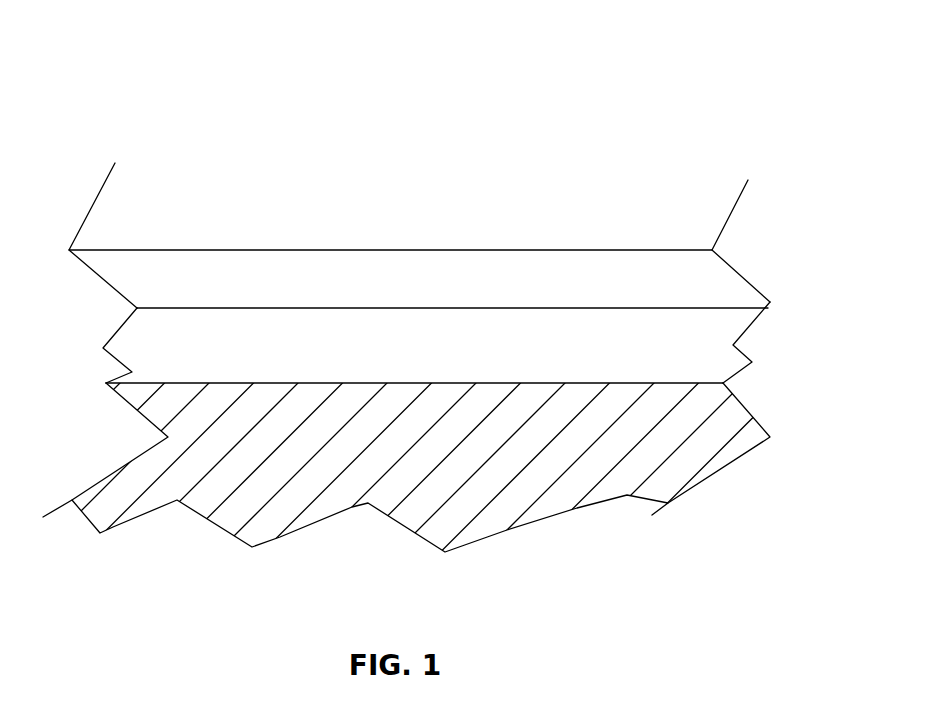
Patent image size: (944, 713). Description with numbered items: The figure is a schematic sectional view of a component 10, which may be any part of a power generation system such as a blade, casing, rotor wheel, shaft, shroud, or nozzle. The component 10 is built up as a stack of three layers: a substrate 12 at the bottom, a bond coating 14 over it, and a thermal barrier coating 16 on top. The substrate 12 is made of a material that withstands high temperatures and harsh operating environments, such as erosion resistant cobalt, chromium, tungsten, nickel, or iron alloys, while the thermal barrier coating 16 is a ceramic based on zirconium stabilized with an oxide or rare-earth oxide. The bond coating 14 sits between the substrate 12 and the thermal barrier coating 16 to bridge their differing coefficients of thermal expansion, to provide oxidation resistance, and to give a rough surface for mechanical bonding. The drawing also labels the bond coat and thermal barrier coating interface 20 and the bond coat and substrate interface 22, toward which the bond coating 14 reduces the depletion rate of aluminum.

The component 10 is at (423, 300).
The substrate 12 is at (387, 452).
The bond coating 14 is at (392, 356).
The thermal barrier coating (TBC) 16 is at (391, 292).
The bond coat and thermal barrier coating interface 20 is at (660, 308).
The bond coat and substrate interface 22 is at (670, 383).